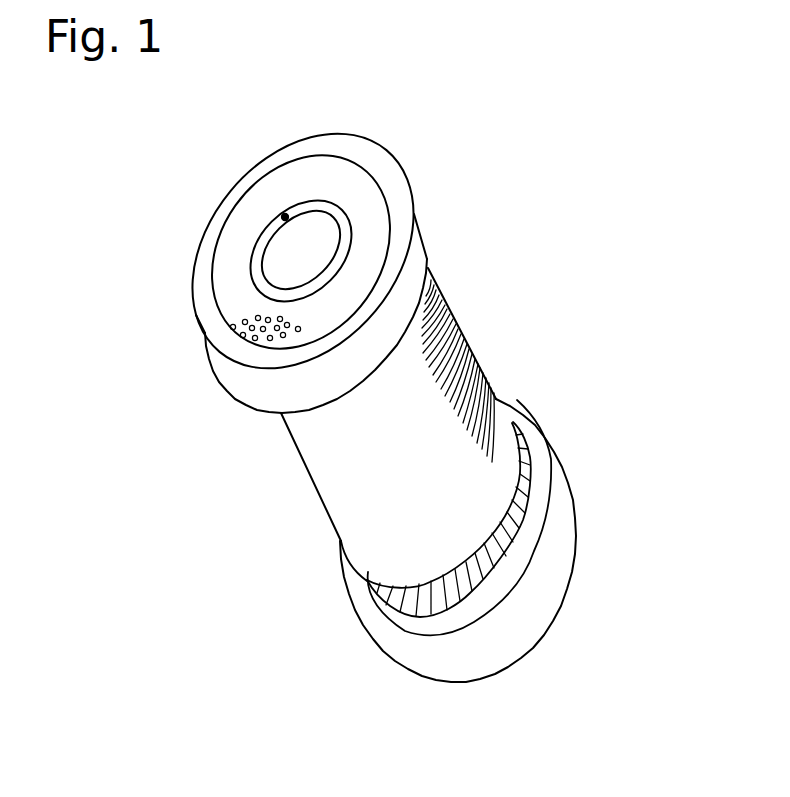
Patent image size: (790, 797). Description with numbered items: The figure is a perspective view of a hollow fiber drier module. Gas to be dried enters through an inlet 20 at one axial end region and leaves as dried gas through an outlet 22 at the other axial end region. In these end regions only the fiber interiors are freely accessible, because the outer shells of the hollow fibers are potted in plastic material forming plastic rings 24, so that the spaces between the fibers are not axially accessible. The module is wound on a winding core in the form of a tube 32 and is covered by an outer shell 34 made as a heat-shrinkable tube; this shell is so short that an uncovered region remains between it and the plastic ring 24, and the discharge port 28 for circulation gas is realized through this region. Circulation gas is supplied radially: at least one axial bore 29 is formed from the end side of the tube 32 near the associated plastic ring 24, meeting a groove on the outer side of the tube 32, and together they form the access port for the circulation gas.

The inlet 20 is at (242, 243).
The outlet 22 is at (407, 374).
The plastic rings 24 is at (413, 270).
The discharge port 28 is at (528, 496).
The axial bore 29 is at (285, 215).
The tube 32 is at (320, 207).
The outer shell 34 is at (337, 493).